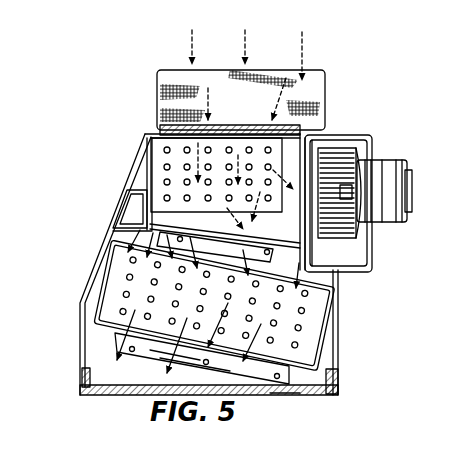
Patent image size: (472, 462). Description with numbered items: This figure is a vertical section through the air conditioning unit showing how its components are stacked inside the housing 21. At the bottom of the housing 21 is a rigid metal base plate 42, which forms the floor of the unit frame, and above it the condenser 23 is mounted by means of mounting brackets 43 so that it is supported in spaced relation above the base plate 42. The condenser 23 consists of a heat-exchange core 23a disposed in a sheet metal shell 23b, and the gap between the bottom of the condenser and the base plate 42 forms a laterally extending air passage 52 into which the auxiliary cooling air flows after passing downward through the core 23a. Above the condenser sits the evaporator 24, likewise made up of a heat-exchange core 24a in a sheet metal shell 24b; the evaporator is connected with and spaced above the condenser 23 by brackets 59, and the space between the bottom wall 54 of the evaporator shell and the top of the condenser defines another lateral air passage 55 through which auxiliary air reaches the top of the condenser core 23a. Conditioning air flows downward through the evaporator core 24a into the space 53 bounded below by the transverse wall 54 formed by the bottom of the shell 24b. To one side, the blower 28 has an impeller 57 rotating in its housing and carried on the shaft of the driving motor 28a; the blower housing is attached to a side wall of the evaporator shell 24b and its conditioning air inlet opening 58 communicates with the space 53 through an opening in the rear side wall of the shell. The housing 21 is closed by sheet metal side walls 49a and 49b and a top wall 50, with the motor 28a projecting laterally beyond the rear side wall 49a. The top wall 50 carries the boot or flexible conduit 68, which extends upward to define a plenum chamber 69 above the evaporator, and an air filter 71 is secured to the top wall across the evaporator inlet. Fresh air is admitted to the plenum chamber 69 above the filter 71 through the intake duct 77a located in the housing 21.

The housing 21 is at (140, 149).
The condenser 23 is at (108, 250).
The heat-exchange core 23a is at (104, 270).
The sheet metal shell 23b is at (130, 277).
The evaporator 24 is at (147, 168).
The heat-exchange core 24a is at (150, 181).
The sheet metal shell 24b is at (163, 198).
The blower 28 is at (372, 263).
The driving motor 28a is at (392, 162).
The base plate 42 is at (202, 359).
The mounting brackets 43 is at (198, 386).
The rear side wall 49a is at (339, 306).
The side wall 49b is at (80, 324).
The top wall 50 is at (312, 137).
The air passage 52 is at (270, 392).
The space 53 is at (217, 174).
The transverse wall 54 is at (224, 247).
The air passage 55 is at (212, 301).
The impeller 57 is at (333, 150).
The conditioning air inlet openings 58 is at (304, 203).
The brackets 59 is at (215, 240).
The flexible conduit 68 is at (157, 104).
The plenum chamber 69 is at (222, 72).
The air filter 71 is at (258, 120).
The intake duct 77a is at (140, 222).